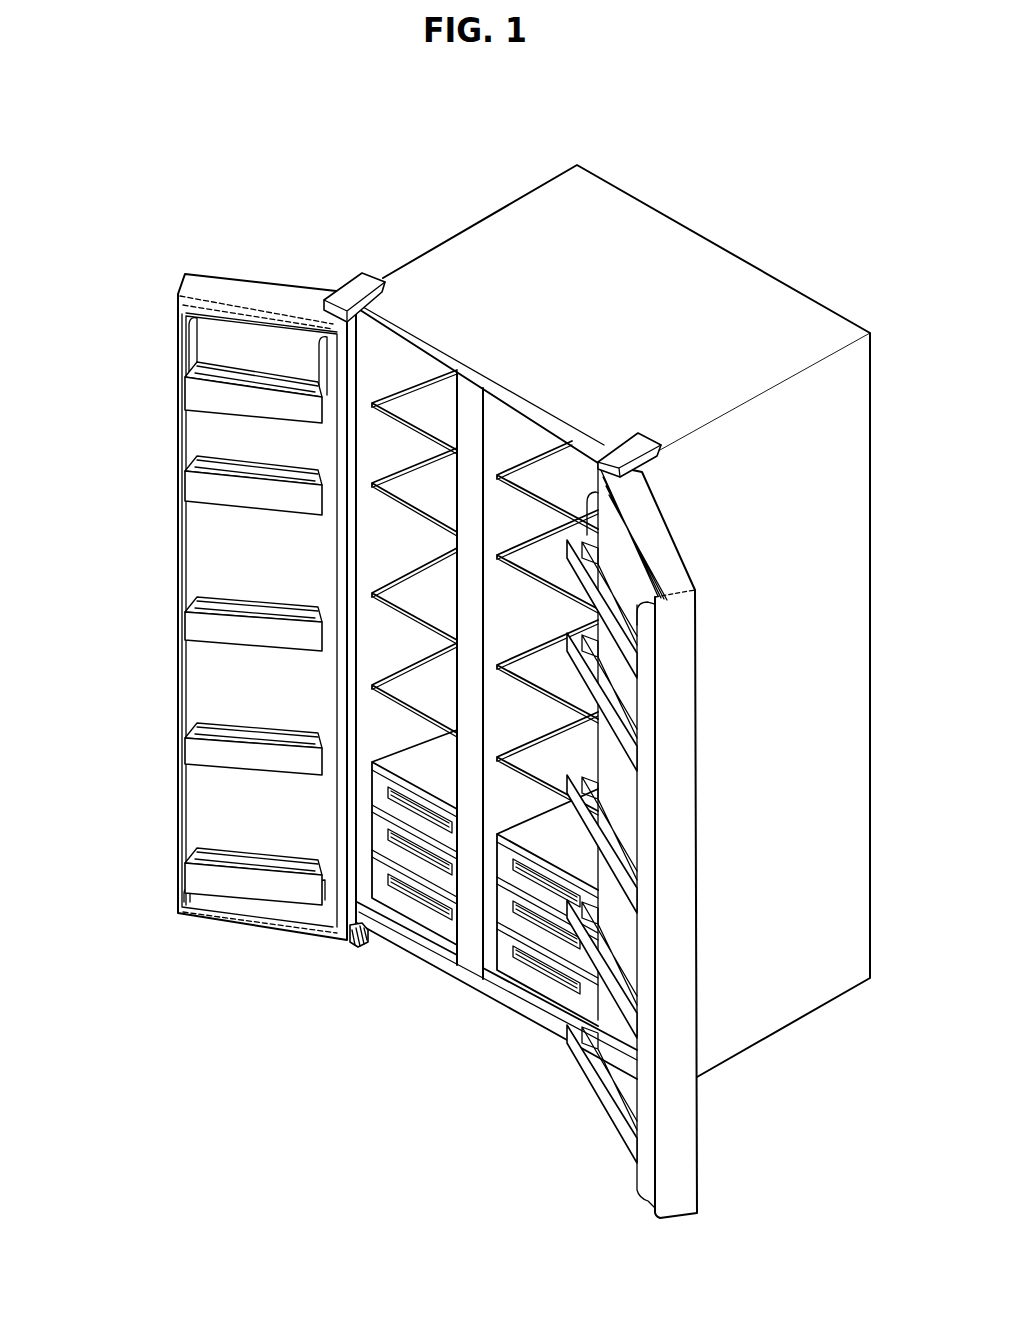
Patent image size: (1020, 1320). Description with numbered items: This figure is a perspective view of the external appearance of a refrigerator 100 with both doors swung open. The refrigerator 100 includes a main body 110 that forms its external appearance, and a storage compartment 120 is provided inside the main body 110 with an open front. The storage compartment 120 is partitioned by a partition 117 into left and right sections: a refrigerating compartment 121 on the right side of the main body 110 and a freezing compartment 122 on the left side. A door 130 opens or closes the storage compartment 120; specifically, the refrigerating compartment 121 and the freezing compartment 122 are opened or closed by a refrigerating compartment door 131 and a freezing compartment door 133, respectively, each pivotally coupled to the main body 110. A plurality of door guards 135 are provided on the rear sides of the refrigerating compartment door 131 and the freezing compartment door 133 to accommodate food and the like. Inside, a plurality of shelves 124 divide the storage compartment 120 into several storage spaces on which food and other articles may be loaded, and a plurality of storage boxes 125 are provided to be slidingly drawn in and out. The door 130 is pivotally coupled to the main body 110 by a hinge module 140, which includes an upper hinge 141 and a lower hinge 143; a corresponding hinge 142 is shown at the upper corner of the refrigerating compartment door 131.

The refrigerator 100 is at (666, 86).
The main body 110 is at (816, 282).
The partition 117 is at (468, 396).
The storage compartment 120 is at (110, 497).
The refrigerating compartment 121 is at (512, 735).
The freezing compartment 122 is at (394, 654).
The shelf 124 is at (398, 487).
The storage box 125 is at (388, 790).
The door 130 is at (408, 746).
The refrigerating compartment door 131 is at (668, 675).
The freezing compartment door 133 is at (185, 500).
The door guard 135 is at (195, 392).
The hinge module 140 is at (337, 629).
The upper hinge 141 is at (350, 276).
The upper hinge of first door 142 is at (629, 455).
The lower hinge 143 is at (347, 947).